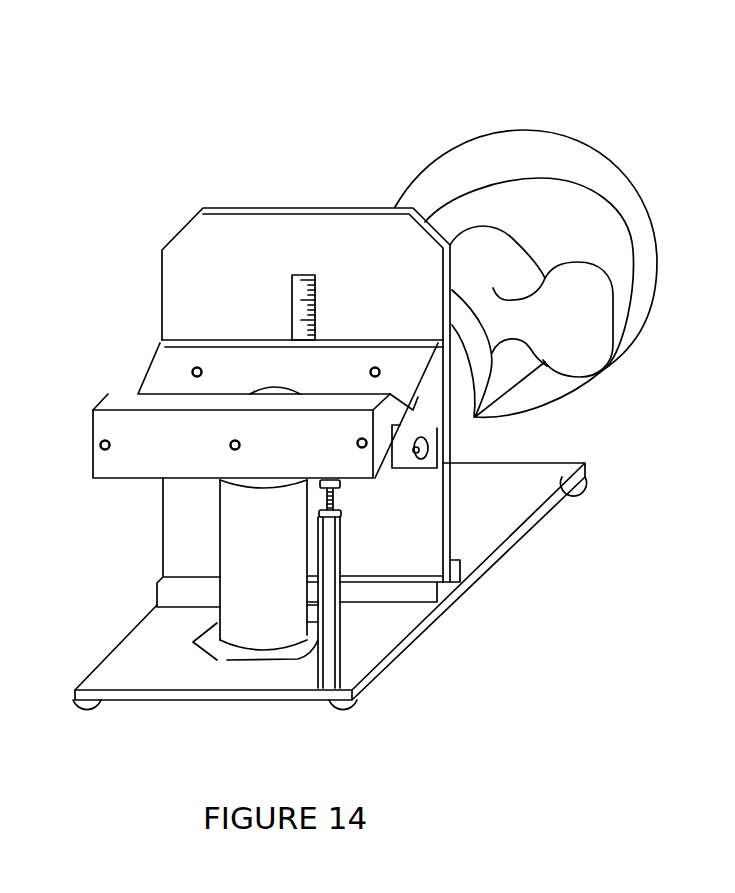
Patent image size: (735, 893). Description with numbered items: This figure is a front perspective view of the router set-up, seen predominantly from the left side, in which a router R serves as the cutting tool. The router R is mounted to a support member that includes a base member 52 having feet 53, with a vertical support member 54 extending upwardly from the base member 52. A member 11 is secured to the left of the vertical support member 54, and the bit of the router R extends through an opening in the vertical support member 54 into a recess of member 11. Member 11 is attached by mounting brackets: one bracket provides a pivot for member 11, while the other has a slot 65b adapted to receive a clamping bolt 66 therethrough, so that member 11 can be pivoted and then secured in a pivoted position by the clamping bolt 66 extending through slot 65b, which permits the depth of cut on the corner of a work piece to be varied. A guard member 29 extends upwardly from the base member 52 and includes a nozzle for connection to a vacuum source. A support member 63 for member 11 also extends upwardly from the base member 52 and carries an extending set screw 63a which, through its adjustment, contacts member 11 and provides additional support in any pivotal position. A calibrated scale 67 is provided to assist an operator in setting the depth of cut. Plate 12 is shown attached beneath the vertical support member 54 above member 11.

The router R is at (656, 263).
The vertical support member 54 is at (177, 228).
The calibrated scale 67 is at (300, 273).
The fence plate 12 is at (160, 372).
The member 11 is at (145, 457).
The slot 65b is at (429, 440).
The clamping bolt 66 is at (433, 465).
The guard member 29 is at (243, 602).
The support member 63 is at (343, 635).
The set screw 63a is at (341, 493).
The base member 52 is at (503, 494).
The feet 53 is at (591, 502).